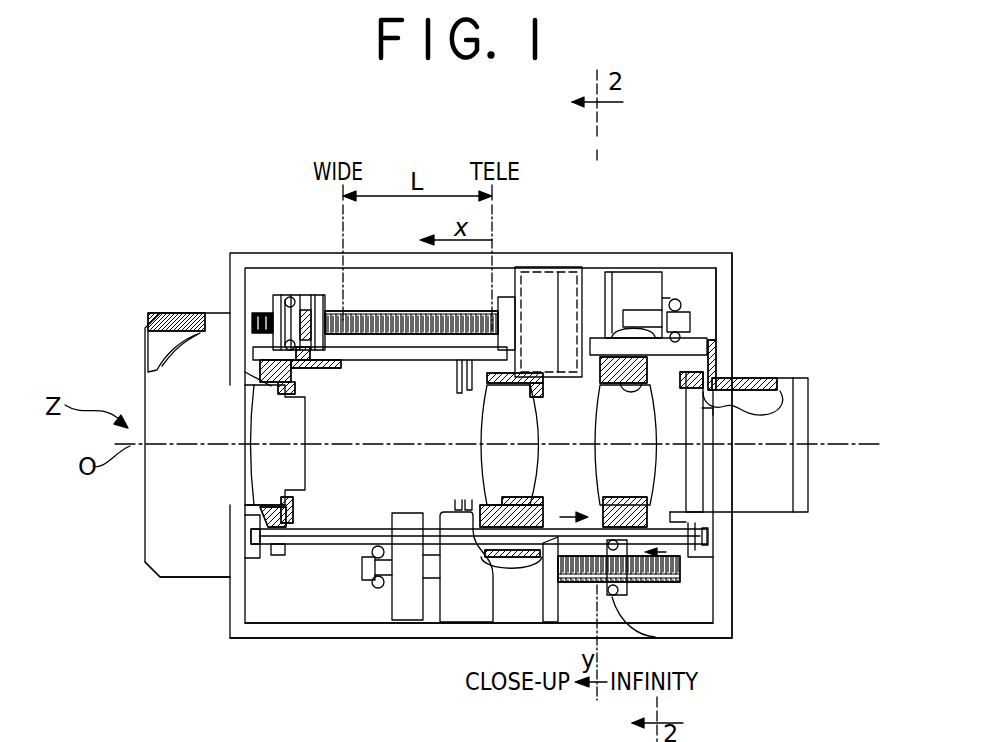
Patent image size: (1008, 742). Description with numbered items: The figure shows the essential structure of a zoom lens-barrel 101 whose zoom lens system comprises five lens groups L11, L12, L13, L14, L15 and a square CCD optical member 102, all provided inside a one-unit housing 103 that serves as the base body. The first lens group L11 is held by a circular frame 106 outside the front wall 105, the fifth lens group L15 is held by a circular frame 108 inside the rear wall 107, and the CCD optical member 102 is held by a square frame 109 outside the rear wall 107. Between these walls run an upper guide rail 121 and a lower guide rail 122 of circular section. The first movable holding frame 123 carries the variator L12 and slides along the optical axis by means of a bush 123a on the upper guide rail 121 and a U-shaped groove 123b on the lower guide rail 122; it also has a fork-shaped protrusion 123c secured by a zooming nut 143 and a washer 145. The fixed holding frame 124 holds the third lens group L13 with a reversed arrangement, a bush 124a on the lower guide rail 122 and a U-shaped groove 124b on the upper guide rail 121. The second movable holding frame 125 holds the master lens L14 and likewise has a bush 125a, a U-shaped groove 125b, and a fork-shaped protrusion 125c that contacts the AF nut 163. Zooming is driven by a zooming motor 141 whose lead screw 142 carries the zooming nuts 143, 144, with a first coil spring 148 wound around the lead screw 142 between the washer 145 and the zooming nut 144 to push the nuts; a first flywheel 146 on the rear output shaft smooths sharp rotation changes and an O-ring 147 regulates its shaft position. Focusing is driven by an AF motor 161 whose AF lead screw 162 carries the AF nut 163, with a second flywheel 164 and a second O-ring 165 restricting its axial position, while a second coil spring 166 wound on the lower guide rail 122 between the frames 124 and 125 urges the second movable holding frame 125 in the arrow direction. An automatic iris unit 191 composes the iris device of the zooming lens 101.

The zoom lens-barrel 101 is at (229, 253).
The CCD optical member 102 is at (760, 405).
The housing 103 is at (265, 636).
The front wall 105 is at (230, 615).
The circular frame 106 is at (176, 554).
The rear wall 107 is at (725, 292).
The circular frame 108 is at (700, 478).
The square frame 109 is at (767, 498).
The upper guide rail 121 is at (466, 357).
The lower guide rail 122 is at (320, 529).
The first movable holding frame 123 is at (300, 508).
The bush 123a is at (312, 360).
The U-shaped groove 123b is at (280, 556).
The fork-shaped protrusion 123c is at (288, 298).
The fixed holding frame 124 is at (537, 394).
The bush 124a is at (515, 573).
The U-shaped groove 124b is at (485, 385).
The second movable holding frame 125 is at (700, 512).
The bush 125a is at (677, 553).
The U-shaped groove 125b is at (700, 342).
The fork-shaped protrusion 125c is at (625, 600).
The zooming motor 141 is at (640, 282).
The lead screw 142 is at (382, 310).
The zooming nut 143 is at (270, 320).
The zooming nut 144 is at (318, 292).
The washer 145 is at (150, 445).
The first flywheel 146 is at (640, 290).
The O-ring 147 is at (668, 292).
The first coil spring 148 is at (305, 360).
The AF motor 161 is at (463, 610).
The AF lead screw 162 is at (627, 590).
The AF nut 163 is at (675, 600).
The second flywheel 164 is at (405, 605).
The second O-ring 165 is at (303, 622).
The second coil spring 166 is at (560, 517).
The automatic iris unit 191 is at (515, 266).
The first lens group L11 is at (173, 331).
The second lens group (variator) L12 is at (245, 478).
The third lens group L13 is at (496, 468).
The fourth lens group (master lens) L14 is at (613, 464).
The fifth lens group L15 is at (735, 380).